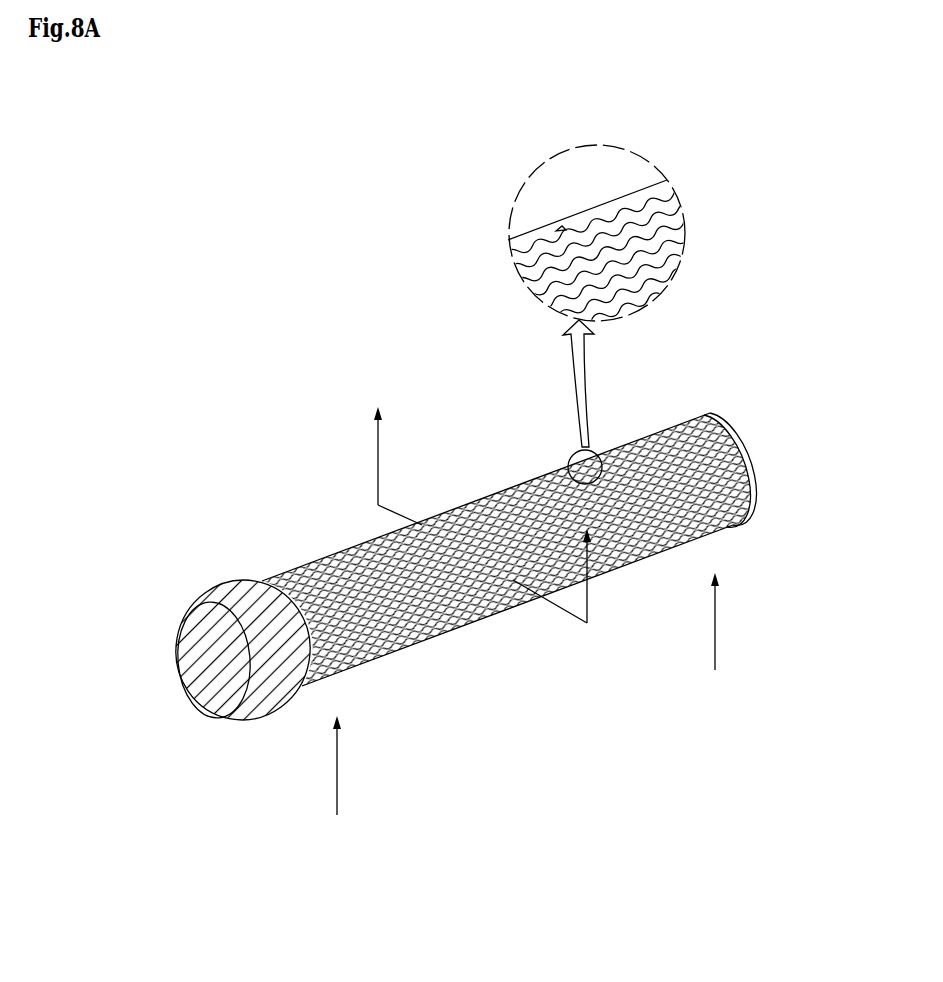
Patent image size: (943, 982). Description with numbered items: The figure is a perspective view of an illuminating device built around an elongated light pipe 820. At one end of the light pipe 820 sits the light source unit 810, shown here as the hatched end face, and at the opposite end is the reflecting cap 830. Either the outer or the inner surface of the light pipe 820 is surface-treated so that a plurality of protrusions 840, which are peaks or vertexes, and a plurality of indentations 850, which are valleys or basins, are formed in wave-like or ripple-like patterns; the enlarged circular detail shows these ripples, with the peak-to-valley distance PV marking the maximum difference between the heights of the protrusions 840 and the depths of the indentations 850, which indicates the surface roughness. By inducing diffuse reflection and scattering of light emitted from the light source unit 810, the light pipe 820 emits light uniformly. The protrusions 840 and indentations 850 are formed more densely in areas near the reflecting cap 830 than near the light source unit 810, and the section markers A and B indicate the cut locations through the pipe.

The light source unit 810 is at (286, 689).
The light pipe 820 is at (363, 660).
The reflecting cap 830 is at (757, 490).
The protrusions 840 is at (612, 196).
The indentations 850 is at (508, 240).
The peak-to-valley surface roughness PV is at (530, 233).
The section A is at (337, 778).
The section B is at (546, 539).